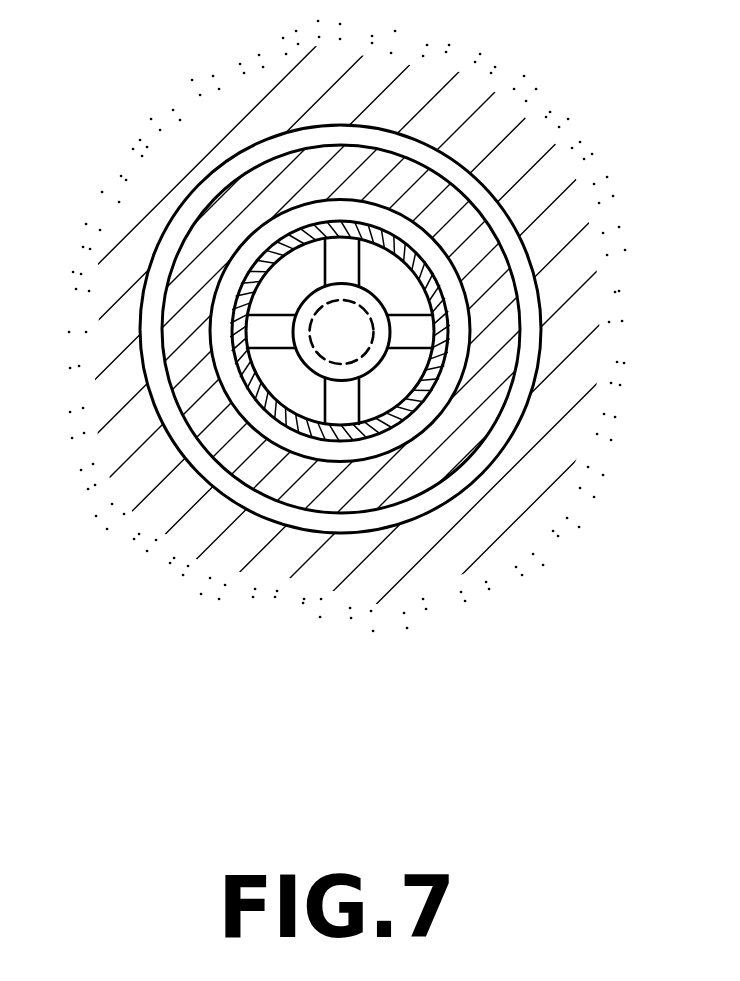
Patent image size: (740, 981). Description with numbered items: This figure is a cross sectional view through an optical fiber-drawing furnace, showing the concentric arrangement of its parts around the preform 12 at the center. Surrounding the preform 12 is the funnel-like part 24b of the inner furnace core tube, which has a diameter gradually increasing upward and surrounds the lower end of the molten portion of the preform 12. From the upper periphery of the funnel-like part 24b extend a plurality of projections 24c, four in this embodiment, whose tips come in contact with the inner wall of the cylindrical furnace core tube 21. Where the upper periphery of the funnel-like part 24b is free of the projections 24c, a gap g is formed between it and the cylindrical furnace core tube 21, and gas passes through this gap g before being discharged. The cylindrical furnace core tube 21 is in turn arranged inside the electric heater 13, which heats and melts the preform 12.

The electric heater 13 is at (182, 365).
The cylindrical furnace core tube 21 is at (278, 423).
The preform 12 is at (382, 364).
The projections 24c is at (428, 325).
The funnel-like part 24b is at (388, 279).
The gap g is at (371, 406).